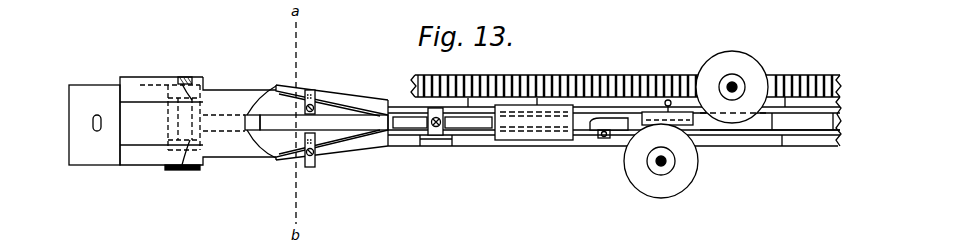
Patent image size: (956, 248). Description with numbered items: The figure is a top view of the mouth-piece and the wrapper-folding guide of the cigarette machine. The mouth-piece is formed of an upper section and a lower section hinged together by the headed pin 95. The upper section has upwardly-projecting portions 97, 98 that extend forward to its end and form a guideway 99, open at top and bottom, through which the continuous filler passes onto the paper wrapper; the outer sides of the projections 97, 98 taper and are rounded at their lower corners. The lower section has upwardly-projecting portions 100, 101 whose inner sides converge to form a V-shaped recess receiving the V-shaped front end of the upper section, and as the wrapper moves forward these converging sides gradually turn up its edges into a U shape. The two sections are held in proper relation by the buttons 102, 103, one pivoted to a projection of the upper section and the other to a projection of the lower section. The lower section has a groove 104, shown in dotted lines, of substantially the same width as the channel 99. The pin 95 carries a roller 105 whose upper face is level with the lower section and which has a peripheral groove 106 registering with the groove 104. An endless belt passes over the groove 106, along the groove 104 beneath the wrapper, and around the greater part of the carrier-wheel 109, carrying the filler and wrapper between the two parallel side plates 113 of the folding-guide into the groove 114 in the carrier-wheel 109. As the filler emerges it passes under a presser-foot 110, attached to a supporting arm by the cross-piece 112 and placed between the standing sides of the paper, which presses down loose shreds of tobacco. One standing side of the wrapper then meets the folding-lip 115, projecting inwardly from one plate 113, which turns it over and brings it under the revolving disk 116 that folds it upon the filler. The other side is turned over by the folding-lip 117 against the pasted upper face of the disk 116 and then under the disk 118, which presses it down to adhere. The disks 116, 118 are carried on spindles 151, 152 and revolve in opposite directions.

The headed pin 95 is at (178, 171).
The upwardly-projecting portion 97 is at (268, 93).
The upwardly-projecting portion 98 is at (268, 158).
The guideway 99 is at (324, 122).
The upwardly-projecting portion 100 is at (352, 98).
The upwardly-projecting portion 101 is at (361, 150).
The button 102 is at (312, 91).
The button 103 is at (313, 167).
The groove 104 is at (231, 123).
The roller 105 is at (167, 106).
The peripheral groove 106 is at (168, 120).
The carrier-wheel 109 is at (737, 140).
The presser-foot 110 is at (408, 130).
The cross-piece 112 is at (440, 136).
The side plate of folding-guide 113 is at (405, 108).
The groove 114 is at (817, 118).
The folding-lip 115 is at (600, 131).
The revolving disk 116 is at (648, 169).
The folding-lip 117 is at (683, 112).
The disk 118 is at (749, 82).
The spindle 151 is at (656, 165).
The spindle 152 is at (737, 84).